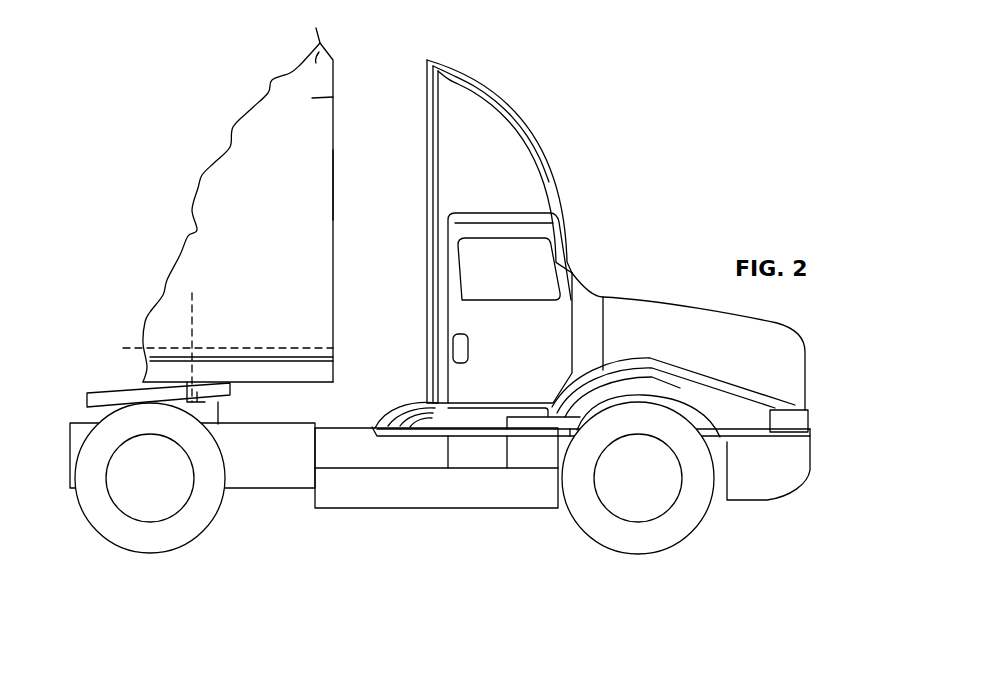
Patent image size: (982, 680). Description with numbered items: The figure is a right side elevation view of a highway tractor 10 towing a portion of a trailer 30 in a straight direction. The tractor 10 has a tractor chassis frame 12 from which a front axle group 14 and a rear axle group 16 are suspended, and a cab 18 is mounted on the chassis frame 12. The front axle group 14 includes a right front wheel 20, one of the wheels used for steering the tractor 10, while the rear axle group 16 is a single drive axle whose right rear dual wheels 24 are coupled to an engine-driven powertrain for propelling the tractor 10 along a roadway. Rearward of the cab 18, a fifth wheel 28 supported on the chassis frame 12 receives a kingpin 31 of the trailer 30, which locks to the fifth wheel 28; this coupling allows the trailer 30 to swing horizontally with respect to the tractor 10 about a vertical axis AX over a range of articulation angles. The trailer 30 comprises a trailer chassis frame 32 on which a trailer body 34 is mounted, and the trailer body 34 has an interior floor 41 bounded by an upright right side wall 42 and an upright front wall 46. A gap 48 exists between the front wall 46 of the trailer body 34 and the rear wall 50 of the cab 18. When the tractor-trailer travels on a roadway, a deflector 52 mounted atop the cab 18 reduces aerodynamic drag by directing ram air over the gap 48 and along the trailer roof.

The highway tractor 10 is at (665, 244).
The tractor chassis frame 12 is at (282, 488).
The front axle group 14 is at (708, 519).
The rear axle group 16 is at (195, 533).
The cab 18 is at (570, 258).
The right front wheel 20 is at (653, 490).
The right rear dual wheels 24 is at (153, 498).
The fifth wheel 28 is at (230, 395).
The trailer 30 is at (337, 51).
The kingpin 31 is at (218, 403).
The trailer chassis frame 32 is at (318, 372).
The trailer body 34 is at (312, 98).
The interior floor 41 is at (123, 348).
The right side wall 42 is at (200, 242).
The front wall 46 is at (333, 185).
The gap 48 is at (380, 243).
The rear wall 50 is at (427, 304).
The deflector 52 is at (482, 82).
The vertical axis AX is at (205, 297).